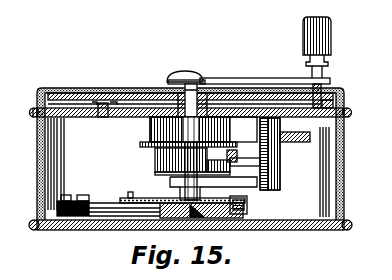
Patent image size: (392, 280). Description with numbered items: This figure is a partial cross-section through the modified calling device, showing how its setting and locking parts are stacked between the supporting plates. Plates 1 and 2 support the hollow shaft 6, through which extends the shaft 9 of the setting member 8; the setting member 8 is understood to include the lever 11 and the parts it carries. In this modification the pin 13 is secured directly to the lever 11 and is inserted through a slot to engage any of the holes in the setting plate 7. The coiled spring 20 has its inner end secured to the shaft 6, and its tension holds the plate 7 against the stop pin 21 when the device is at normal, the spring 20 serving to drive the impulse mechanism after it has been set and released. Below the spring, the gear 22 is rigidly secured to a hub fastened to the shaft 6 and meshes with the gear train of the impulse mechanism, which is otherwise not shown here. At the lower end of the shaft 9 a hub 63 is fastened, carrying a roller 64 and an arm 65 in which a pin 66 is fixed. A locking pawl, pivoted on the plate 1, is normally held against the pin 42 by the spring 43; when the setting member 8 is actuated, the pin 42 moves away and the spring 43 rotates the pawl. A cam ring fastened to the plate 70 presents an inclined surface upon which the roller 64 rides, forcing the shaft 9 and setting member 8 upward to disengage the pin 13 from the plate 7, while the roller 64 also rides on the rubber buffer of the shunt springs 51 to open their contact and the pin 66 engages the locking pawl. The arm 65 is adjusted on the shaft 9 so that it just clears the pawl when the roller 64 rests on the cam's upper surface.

The plate 1 is at (32, 111).
The plate 2 is at (155, 166).
The hollow shaft 6 is at (157, 107).
The setting plate 7 is at (75, 88).
The setting member 8 is at (185, 75).
The shaft 9 is at (203, 84).
The lever 11 is at (247, 78).
The pin 13 is at (324, 90).
The coiled spring 20 is at (127, 100).
The stop pin 21 is at (105, 117).
The gear 22 is at (140, 146).
The pin 42 is at (203, 129).
The spring 43 is at (280, 173).
The shunt springs 51 is at (95, 212).
The hub 63 is at (226, 214).
The roller 64 is at (247, 198).
The arm 65 is at (170, 197).
The pin 66 is at (128, 194).
The plate 70 is at (137, 230).